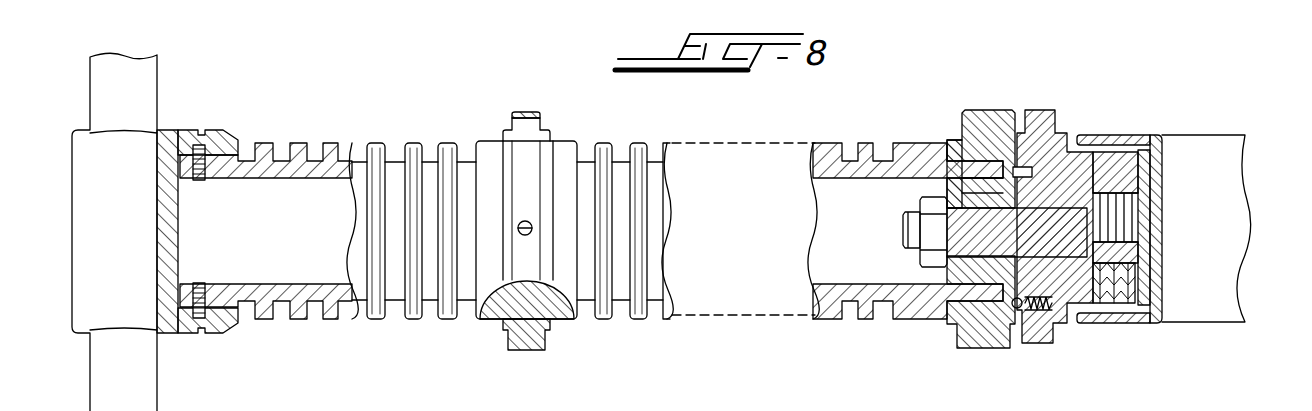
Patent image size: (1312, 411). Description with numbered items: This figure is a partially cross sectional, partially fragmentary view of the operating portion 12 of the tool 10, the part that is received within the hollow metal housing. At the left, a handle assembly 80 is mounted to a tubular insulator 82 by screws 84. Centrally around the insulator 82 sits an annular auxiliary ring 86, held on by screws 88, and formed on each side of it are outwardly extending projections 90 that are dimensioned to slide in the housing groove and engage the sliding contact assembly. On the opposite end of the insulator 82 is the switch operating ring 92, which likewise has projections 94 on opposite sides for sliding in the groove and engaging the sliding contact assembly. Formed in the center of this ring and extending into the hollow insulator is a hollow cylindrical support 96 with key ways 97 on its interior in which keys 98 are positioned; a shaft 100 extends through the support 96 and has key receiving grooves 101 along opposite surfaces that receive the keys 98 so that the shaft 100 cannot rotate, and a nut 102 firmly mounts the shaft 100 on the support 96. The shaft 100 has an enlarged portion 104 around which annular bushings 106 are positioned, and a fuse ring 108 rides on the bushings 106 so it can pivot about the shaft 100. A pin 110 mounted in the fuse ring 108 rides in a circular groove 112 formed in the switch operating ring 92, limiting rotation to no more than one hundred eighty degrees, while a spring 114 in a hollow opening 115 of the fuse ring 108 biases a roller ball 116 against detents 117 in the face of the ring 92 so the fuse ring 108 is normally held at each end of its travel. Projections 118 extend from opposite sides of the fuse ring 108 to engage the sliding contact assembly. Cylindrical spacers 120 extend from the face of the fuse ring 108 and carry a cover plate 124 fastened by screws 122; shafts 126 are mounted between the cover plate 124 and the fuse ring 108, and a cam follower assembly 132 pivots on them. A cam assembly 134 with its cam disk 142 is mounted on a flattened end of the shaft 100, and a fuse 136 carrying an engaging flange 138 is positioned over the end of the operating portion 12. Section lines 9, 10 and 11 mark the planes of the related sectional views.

The section line 9- 9 is at (1128, 115).
The tool 10 is at (1107, 20).
The section line 11- 11 is at (1093, 57).
The operating portion 12 is at (632, 339).
The handle assembly 80 is at (158, 348).
The tubular insulator 82 is at (318, 147).
The screws 84 is at (213, 130).
The auxiliary ring 86 is at (552, 141).
The screws 88 is at (525, 221).
The projections 90 is at (527, 112).
The switch operating ring 92 is at (947, 322).
The projections 94 is at (995, 110).
The hollow cylindrical support 96 is at (960, 140).
The key ways 97 is at (950, 133).
The keys 98 is at (980, 117).
The shaft 100 is at (905, 225).
The key receiving grooves 101 is at (957, 324).
The nut 102 is at (923, 262).
The enlarged portion 104 is at (1160, 285).
The annular bushings 106 is at (1060, 142).
The fuse ring 108 is at (1057, 337).
The pin 110 is at (1047, 117).
The circular groove 112 is at (1015, 165).
The spring 114 is at (1027, 343).
The hollow opening 115 is at (1022, 343).
The roller ball 116 is at (1015, 310).
The detents 117 is at (963, 348).
The projections 118 is at (1060, 123).
The cylindrical spacers 120 is at (1153, 133).
The screws 122 is at (1153, 173).
The cover plate 124 is at (1163, 220).
The shafts 126 is at (1153, 258).
The cam follower assembly 132 is at (1157, 318).
The cam assembly 134 is at (1190, 133).
The fuse 136 is at (1220, 133).
The engaging flange 138 is at (1120, 133).
The cam disk 142 is at (1116, 213).